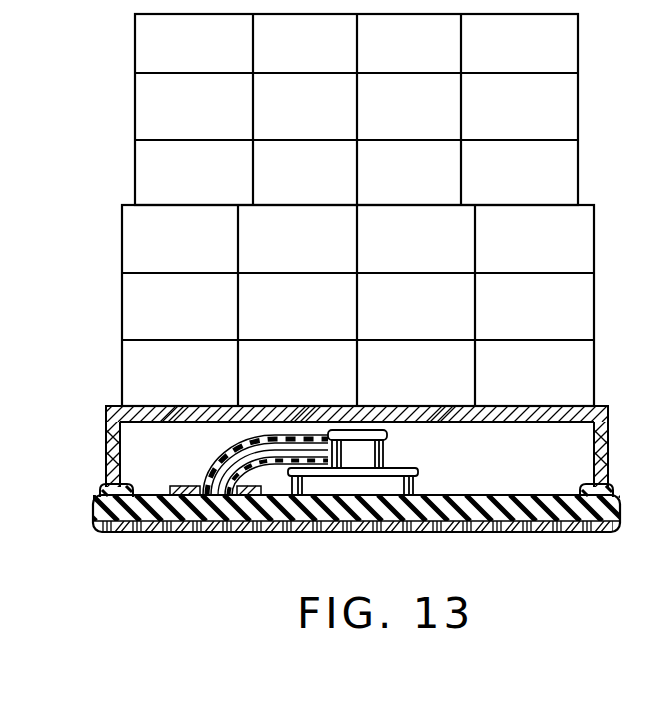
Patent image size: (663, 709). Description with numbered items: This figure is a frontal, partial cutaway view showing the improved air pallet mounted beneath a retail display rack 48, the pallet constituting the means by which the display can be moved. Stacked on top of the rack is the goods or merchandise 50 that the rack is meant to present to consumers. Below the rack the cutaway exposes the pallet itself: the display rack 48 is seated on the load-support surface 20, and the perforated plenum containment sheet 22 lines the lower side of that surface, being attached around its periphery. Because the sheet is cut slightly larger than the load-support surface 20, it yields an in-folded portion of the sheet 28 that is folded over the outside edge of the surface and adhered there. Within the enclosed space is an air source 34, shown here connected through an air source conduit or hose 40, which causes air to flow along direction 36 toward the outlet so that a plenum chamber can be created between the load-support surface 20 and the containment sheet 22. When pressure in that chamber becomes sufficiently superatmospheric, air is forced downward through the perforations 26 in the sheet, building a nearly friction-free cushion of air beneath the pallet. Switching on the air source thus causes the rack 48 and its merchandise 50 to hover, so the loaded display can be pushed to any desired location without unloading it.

The load-support surface 20 is at (341, 470).
The perforated plenum containment sheet 22 is at (148, 528).
The perforations 26 is at (528, 528).
The in-folded portion of the sheet 28 is at (143, 500).
The air source means 34 is at (422, 470).
The direction of air flow 36 is at (215, 470).
The air source conduit or hose 40 is at (250, 441).
The display rack 48 is at (138, 412).
The goods or merchandise 50 is at (160, 102).